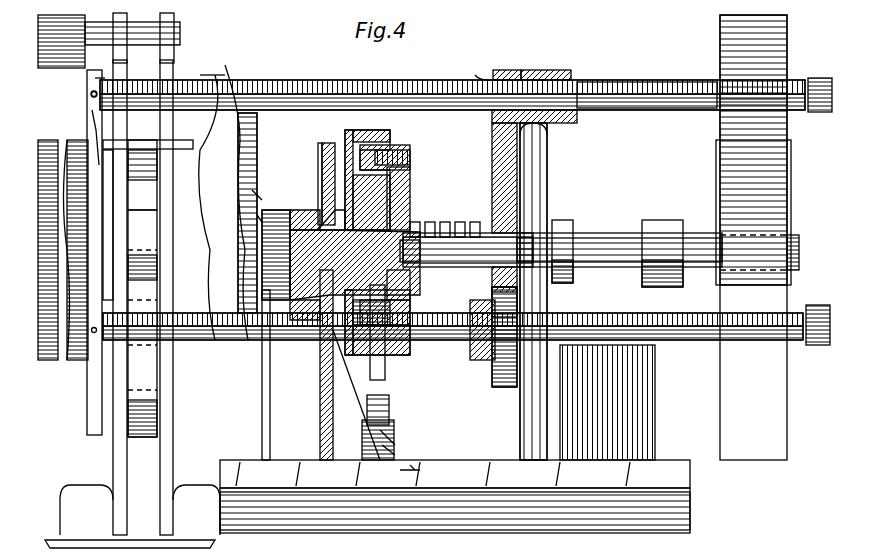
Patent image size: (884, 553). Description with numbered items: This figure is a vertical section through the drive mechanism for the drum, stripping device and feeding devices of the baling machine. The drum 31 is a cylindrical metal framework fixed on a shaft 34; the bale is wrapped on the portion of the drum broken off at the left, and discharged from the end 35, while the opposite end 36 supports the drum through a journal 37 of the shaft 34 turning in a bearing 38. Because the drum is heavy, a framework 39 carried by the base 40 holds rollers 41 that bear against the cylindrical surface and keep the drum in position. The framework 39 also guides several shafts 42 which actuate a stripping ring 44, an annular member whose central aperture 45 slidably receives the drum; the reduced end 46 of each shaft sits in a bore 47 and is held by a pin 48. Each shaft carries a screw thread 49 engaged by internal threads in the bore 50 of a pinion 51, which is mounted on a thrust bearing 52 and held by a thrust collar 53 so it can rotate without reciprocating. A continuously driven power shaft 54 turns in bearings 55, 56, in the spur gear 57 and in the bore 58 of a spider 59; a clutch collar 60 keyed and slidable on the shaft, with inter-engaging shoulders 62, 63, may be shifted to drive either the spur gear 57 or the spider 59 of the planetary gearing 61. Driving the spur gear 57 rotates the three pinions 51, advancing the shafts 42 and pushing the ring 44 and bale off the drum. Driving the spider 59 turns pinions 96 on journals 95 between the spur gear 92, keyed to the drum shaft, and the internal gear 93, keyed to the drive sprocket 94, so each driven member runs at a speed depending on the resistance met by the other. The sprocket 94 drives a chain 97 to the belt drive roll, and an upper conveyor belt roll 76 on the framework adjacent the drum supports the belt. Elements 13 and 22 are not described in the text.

The cross bar 13 is at (100, 370).
The base support 22 is at (480, 540).
The drum 31 is at (215, 85).
The shaft 34 is at (262, 248).
The end of drum 35 is at (40, 350).
The opposite end of drum 36 is at (262, 150).
The journal 37 is at (262, 225).
The bearing 38 is at (262, 200).
The framework 39 is at (120, 62).
The base 40 is at (215, 545).
The rollers 41 is at (160, 210).
The shafts 42 is at (278, 80).
The stripping ring 44 is at (90, 405).
The central aperture 45 is at (105, 180).
The reduced end 46 is at (90, 115).
The bore 47 is at (88, 80).
The pin 48 is at (90, 96).
The screw thread 49 is at (605, 95).
The bore 50 is at (480, 82).
The pinion 51 is at (520, 80).
The thrust bearing 52 is at (525, 72).
The thrust collar 53 is at (560, 72).
The power shaft 54 is at (610, 240).
The bearing 55 is at (660, 225).
The bearing 56 is at (562, 222).
The spur gear 57 is at (530, 140).
The bore 58 is at (430, 280).
The spider 59 is at (418, 222).
The clutch collar 60 is at (447, 222).
The planetary gearing 61 is at (375, 378).
The inter-engaging shoulder 62 is at (476, 222).
The inter-engaging shoulder 63 is at (430, 222).
The upper conveyor belt roll 76 is at (174, 28).
The spur gear 92 is at (322, 198).
The internal gear 93 is at (345, 135).
The drive sprocket 94 is at (318, 150).
The journals 95 is at (410, 170).
The pinions 96 is at (410, 145).
The drive chain 97 is at (375, 380).